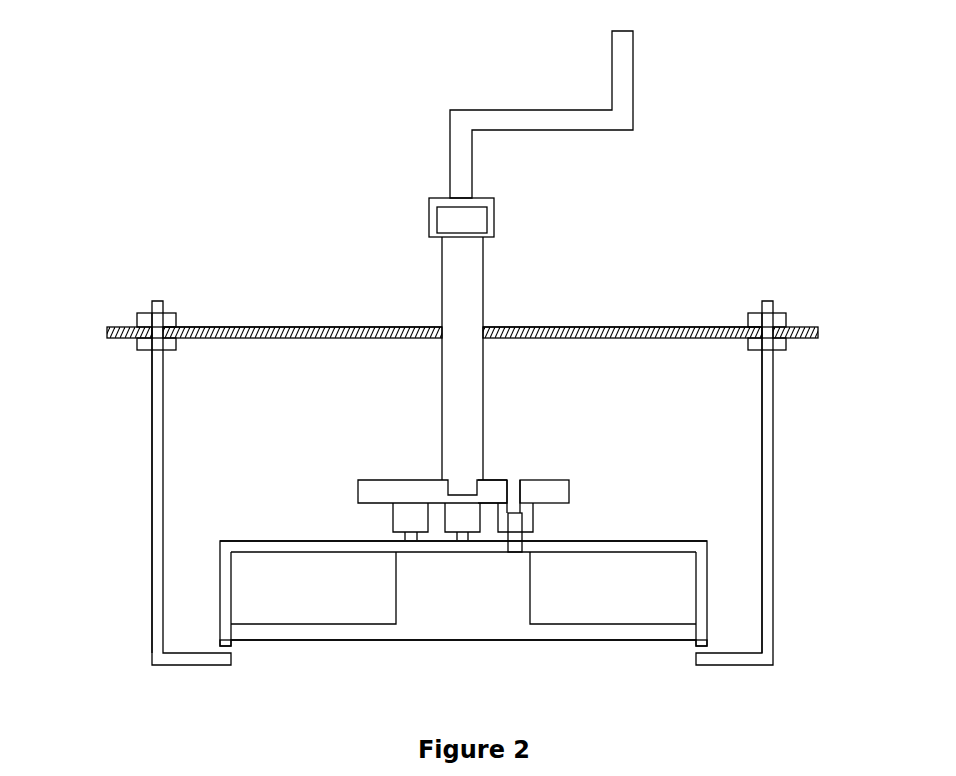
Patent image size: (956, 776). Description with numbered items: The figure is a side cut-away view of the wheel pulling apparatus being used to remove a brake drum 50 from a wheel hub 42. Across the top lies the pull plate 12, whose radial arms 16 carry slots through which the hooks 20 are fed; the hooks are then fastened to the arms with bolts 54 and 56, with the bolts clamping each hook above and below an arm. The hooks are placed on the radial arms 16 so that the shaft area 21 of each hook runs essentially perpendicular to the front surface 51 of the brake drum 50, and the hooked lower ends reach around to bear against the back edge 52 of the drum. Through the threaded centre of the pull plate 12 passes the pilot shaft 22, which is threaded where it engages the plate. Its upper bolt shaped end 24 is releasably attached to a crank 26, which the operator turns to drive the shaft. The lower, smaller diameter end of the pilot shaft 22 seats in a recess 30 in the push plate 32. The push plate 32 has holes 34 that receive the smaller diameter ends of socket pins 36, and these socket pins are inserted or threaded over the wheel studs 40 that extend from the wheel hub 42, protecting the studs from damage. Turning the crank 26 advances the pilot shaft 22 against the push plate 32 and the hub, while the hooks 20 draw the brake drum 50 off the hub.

The pull plate 12 is at (528, 327).
The radial arms 16 is at (288, 327).
The hooks 20 is at (153, 435).
The shaft area 21 is at (157, 498).
The pilot shaft 22 is at (475, 370).
The bolt shaped end 24 is at (476, 220).
The crank 26 is at (563, 122).
The recess 30 is at (448, 492).
The push plate 32 is at (488, 488).
The holes 34 is at (522, 490).
The socket pins 36 is at (522, 520).
The wheel studs 40 is at (523, 540).
The wheel hub 42 is at (477, 622).
The brake drum 50 is at (707, 583).
The front surface 51 is at (655, 541).
The back edge 52 is at (226, 645).
The bolts 54 is at (142, 313).
The bolts 56 is at (138, 347).